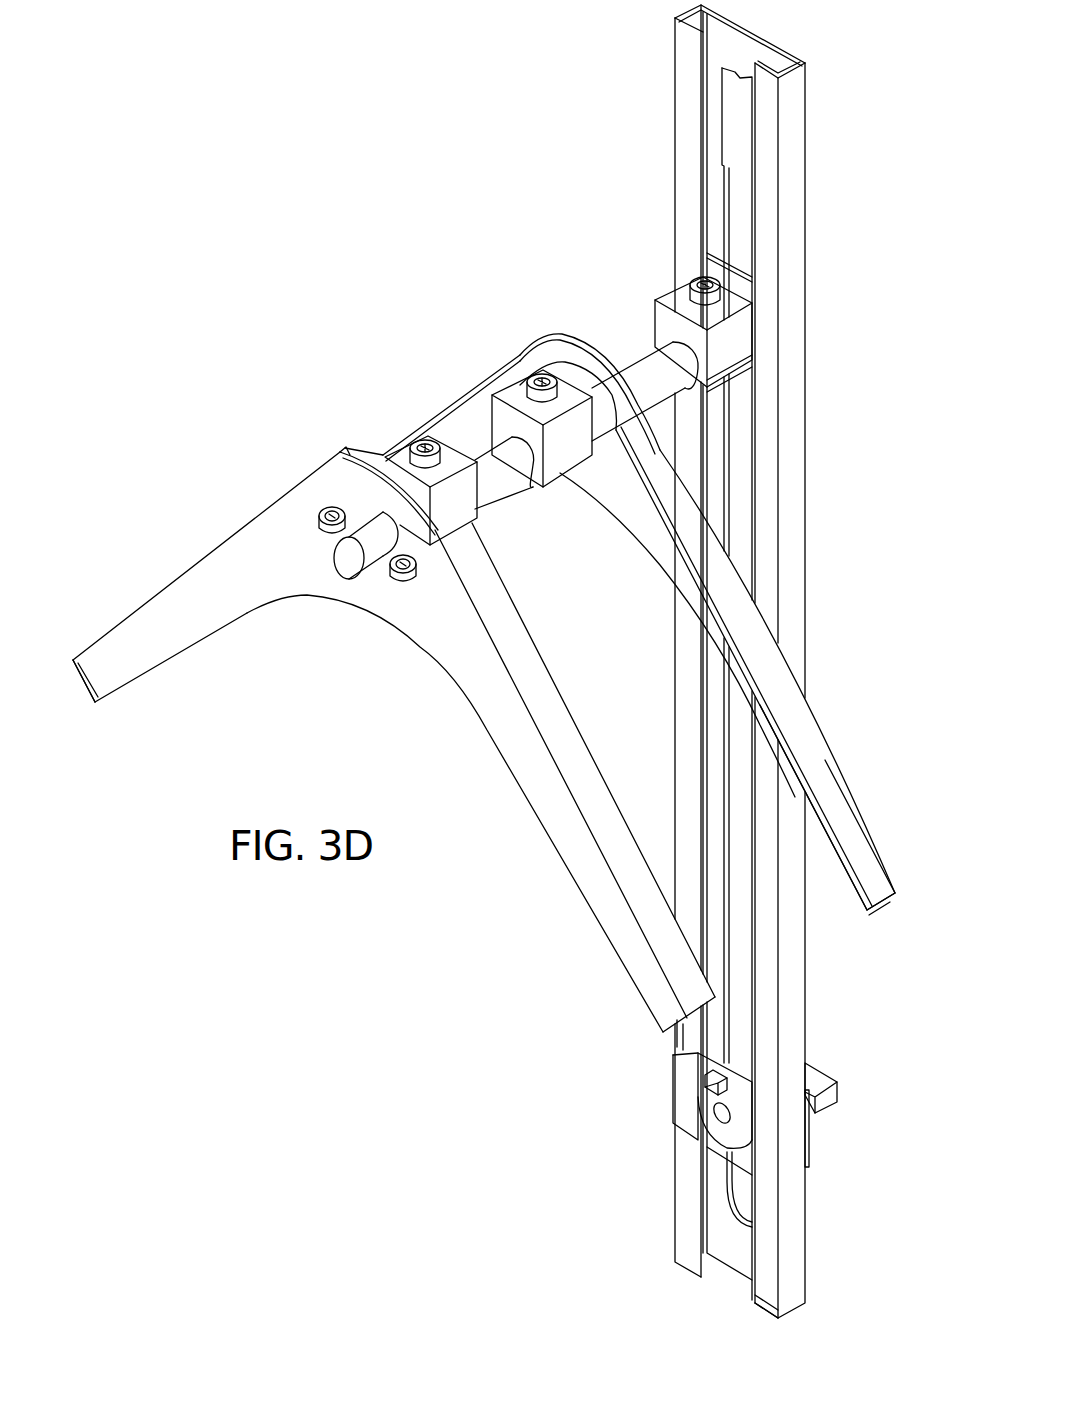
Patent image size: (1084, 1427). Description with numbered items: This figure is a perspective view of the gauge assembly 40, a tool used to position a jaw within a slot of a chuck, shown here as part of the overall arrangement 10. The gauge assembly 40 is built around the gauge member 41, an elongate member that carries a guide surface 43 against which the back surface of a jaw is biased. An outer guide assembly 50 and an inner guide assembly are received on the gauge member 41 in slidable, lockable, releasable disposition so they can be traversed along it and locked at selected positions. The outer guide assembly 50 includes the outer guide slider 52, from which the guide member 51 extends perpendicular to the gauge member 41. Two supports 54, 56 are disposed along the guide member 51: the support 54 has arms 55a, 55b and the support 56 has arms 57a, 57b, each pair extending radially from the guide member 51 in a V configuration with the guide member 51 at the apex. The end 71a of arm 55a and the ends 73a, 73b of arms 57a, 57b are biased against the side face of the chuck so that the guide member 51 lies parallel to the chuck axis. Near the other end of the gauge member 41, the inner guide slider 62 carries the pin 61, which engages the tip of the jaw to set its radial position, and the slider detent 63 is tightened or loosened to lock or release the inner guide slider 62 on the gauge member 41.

The apparatus 10 is at (866, 46).
The gauge assembly 40 is at (690, 90).
The gauge member 41 is at (790, 208).
The guide surface 43 is at (770, 960).
The outer guide assembly 50 is at (650, 372).
The guide member 51 is at (490, 458).
The outer guide slider 52 is at (740, 340).
The support 54 is at (720, 595).
The arm 55a is at (835, 802).
The arm 55b is at (400, 433).
The support 56 is at (412, 622).
The arm 57a is at (625, 960).
The arm 57b is at (122, 650).
The pin 61 is at (700, 1080).
The inner guide slider 62 is at (808, 1150).
The slider detent 63 is at (815, 1070).
The end 71a is at (870, 906).
The end 73a is at (690, 1060).
The end 73b is at (80, 681).